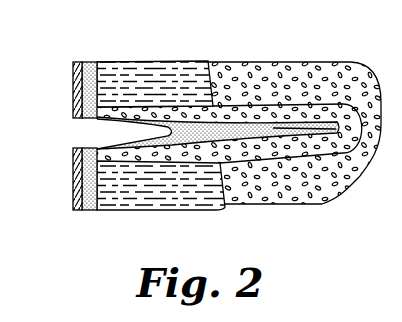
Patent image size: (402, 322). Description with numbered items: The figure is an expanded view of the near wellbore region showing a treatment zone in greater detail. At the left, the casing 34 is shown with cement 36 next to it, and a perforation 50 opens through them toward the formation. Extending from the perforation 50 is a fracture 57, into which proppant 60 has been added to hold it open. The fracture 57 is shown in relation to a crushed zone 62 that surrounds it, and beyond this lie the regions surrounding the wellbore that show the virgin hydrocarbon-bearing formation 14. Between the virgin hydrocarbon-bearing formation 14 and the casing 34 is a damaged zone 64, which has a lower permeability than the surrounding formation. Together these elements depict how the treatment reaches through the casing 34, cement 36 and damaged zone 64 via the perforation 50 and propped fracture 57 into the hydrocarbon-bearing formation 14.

The hydrocarbon-bearing formation 14 is at (272, 192).
The casing 34 is at (73, 72).
The cement 36 is at (89, 72).
The perforation 50 is at (117, 138).
The fracture 57 is at (275, 128).
The proppant 60 is at (230, 127).
The crushed zone 62 is at (329, 116).
The damaged zone 64 is at (135, 67).